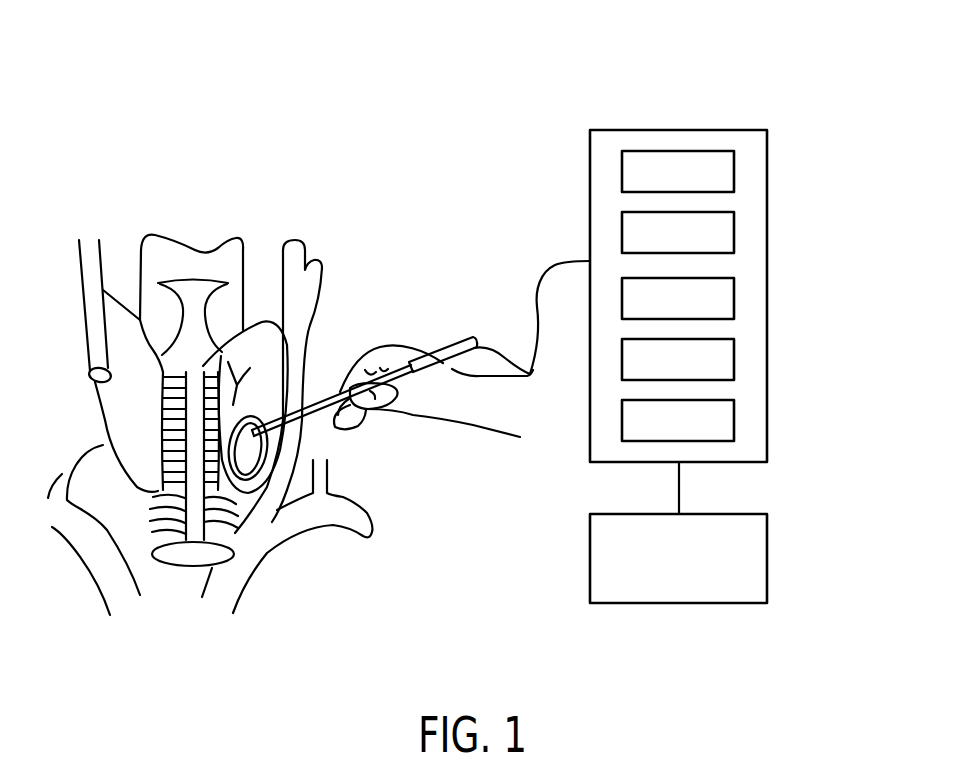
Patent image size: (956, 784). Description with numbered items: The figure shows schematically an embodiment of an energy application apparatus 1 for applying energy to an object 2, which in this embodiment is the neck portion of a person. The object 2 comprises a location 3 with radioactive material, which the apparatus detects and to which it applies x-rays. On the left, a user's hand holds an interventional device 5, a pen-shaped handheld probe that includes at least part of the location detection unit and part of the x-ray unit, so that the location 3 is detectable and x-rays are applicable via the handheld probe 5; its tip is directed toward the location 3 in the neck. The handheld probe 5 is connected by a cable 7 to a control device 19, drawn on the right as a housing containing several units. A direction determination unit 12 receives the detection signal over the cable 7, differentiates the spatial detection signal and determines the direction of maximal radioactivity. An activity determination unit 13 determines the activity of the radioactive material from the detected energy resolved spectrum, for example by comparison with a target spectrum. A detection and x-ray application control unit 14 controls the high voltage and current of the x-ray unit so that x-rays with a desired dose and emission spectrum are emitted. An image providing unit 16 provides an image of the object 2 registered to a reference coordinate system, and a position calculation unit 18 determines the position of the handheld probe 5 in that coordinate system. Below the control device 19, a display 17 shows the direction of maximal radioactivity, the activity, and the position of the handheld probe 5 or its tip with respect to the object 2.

The energy application apparatus 1 is at (603, 84).
The object 2 is at (220, 233).
The location with radioactive material 3 is at (256, 445).
The interventional device 5 is at (320, 393).
The cable 7 is at (487, 347).
The direction determination unit 12 is at (735, 177).
The activity determination unit 13 is at (735, 230).
The detection and x-ray application control unit 14 is at (735, 295).
The image providing unit 16 is at (735, 355).
The display 17 is at (768, 566).
The position calculation unit 18 is at (735, 424).
The control device 19 is at (768, 143).